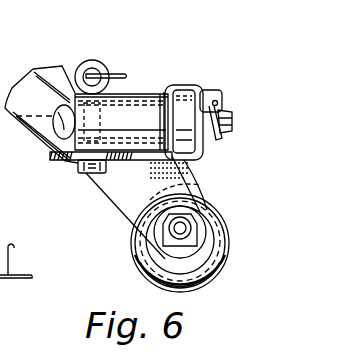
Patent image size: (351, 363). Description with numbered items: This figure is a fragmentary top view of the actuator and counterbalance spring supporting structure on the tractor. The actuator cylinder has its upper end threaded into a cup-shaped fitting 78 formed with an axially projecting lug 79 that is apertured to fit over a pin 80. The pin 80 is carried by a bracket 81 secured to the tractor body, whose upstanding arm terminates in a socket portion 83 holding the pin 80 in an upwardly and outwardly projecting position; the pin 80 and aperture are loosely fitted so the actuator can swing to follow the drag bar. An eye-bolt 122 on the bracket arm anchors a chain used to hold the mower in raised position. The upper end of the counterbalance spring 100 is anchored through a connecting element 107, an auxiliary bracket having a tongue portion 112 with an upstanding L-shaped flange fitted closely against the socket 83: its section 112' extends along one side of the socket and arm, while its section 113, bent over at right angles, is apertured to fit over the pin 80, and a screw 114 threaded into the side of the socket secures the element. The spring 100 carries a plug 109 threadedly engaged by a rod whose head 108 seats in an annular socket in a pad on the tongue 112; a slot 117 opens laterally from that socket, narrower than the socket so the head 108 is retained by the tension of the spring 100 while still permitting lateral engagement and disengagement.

The bracket 81 is at (58, 62).
The eye-bolt 122 is at (91, 60).
The socket portion 83 is at (140, 95).
The flange section 113 is at (163, 94).
The lug 79 is at (187, 92).
The cup-shaped fitting 78 is at (200, 88).
The pin 80 is at (233, 118).
The flange section 112' is at (107, 175).
The screw 114 is at (88, 175).
The tongue portion 112 is at (125, 216).
The connecting element 107 is at (189, 177).
The counterbalance spring 100 is at (212, 278).
The plug 109 is at (165, 259).
The head 108 is at (190, 229).
The slot 117 is at (190, 233).